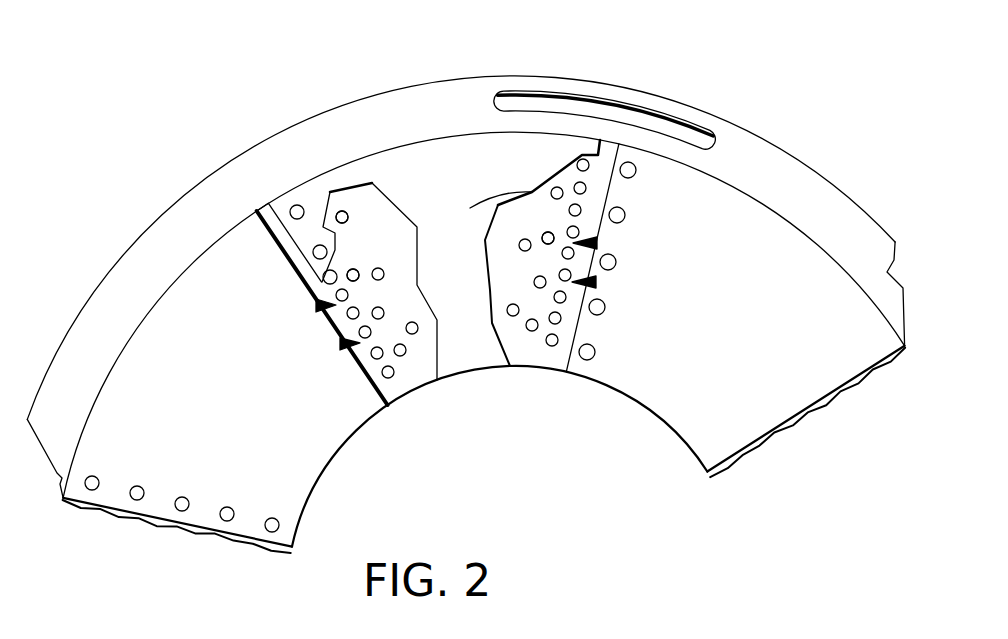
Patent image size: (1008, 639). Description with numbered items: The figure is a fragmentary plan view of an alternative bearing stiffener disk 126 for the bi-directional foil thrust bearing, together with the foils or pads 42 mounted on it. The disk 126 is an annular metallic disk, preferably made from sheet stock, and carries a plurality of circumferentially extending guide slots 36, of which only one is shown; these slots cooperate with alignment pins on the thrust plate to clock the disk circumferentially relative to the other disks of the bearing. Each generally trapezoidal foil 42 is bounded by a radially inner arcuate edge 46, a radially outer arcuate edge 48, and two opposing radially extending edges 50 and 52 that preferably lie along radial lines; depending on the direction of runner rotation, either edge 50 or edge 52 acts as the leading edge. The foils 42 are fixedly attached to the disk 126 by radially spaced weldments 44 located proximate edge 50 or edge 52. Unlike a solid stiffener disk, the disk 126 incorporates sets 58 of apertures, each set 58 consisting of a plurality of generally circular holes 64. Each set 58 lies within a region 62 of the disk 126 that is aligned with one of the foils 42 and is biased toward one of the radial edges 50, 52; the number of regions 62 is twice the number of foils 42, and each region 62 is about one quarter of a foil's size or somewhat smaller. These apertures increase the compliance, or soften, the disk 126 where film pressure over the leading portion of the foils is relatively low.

The bearing stiffener disk 126 is at (614, 80).
The guide slot 36 is at (648, 113).
The radially outer arcuate edge 48 is at (400, 145).
The weldments 44 is at (296, 205).
The radially extending edge 50 is at (283, 247).
The set of apertures 58 is at (320, 306).
The region 62 is at (345, 345).
The circular holes 64 is at (542, 235).
The radially extending edge 52 is at (637, 160).
The foil 42 is at (772, 208).
The radially inner arcuate edge 46 is at (460, 378).